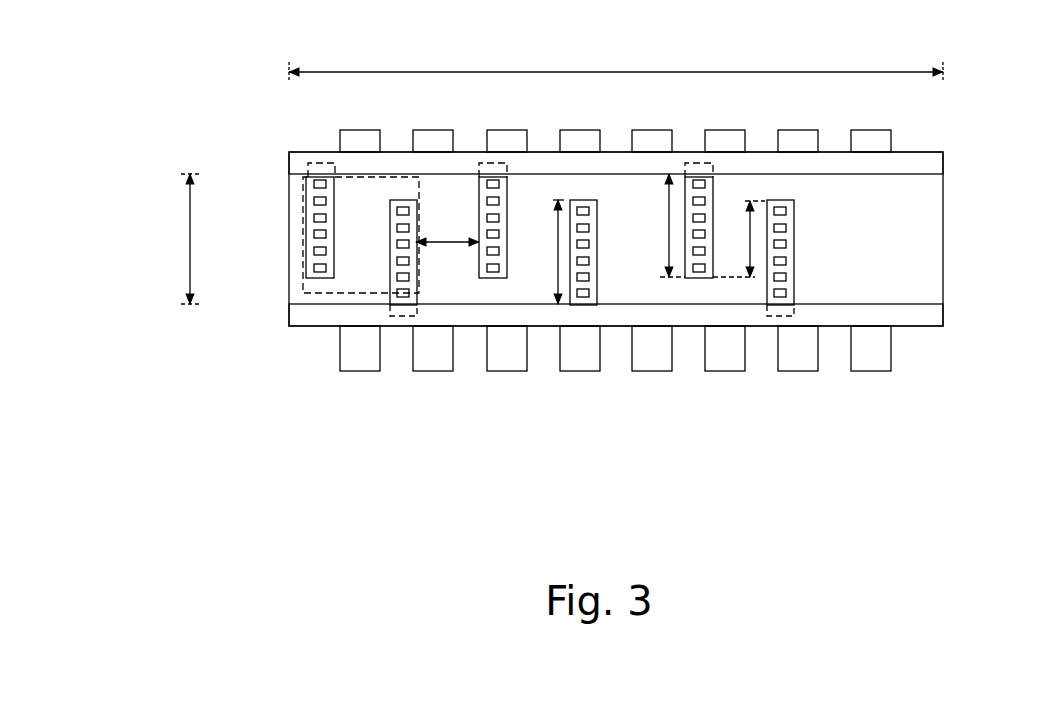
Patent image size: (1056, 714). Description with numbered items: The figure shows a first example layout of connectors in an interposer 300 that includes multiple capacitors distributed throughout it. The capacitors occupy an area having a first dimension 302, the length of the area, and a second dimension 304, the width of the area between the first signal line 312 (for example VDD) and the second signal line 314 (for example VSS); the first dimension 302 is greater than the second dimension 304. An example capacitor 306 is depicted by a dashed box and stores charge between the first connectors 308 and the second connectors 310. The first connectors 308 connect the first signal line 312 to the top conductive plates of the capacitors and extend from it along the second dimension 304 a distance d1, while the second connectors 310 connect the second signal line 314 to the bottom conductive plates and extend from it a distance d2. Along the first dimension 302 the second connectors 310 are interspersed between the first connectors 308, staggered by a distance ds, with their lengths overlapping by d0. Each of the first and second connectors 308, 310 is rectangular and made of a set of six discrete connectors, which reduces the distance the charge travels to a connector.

The interposer 300 is at (966, 108).
The first dimension 302 is at (616, 72).
The second dimension 304 is at (190, 238).
The capacitor 306 is at (303, 198).
The first connectors 308 is at (303, 246).
The second connectors 310 is at (398, 297).
The first signal line 312 is at (289, 164).
The second signal line 314 is at (289, 315).